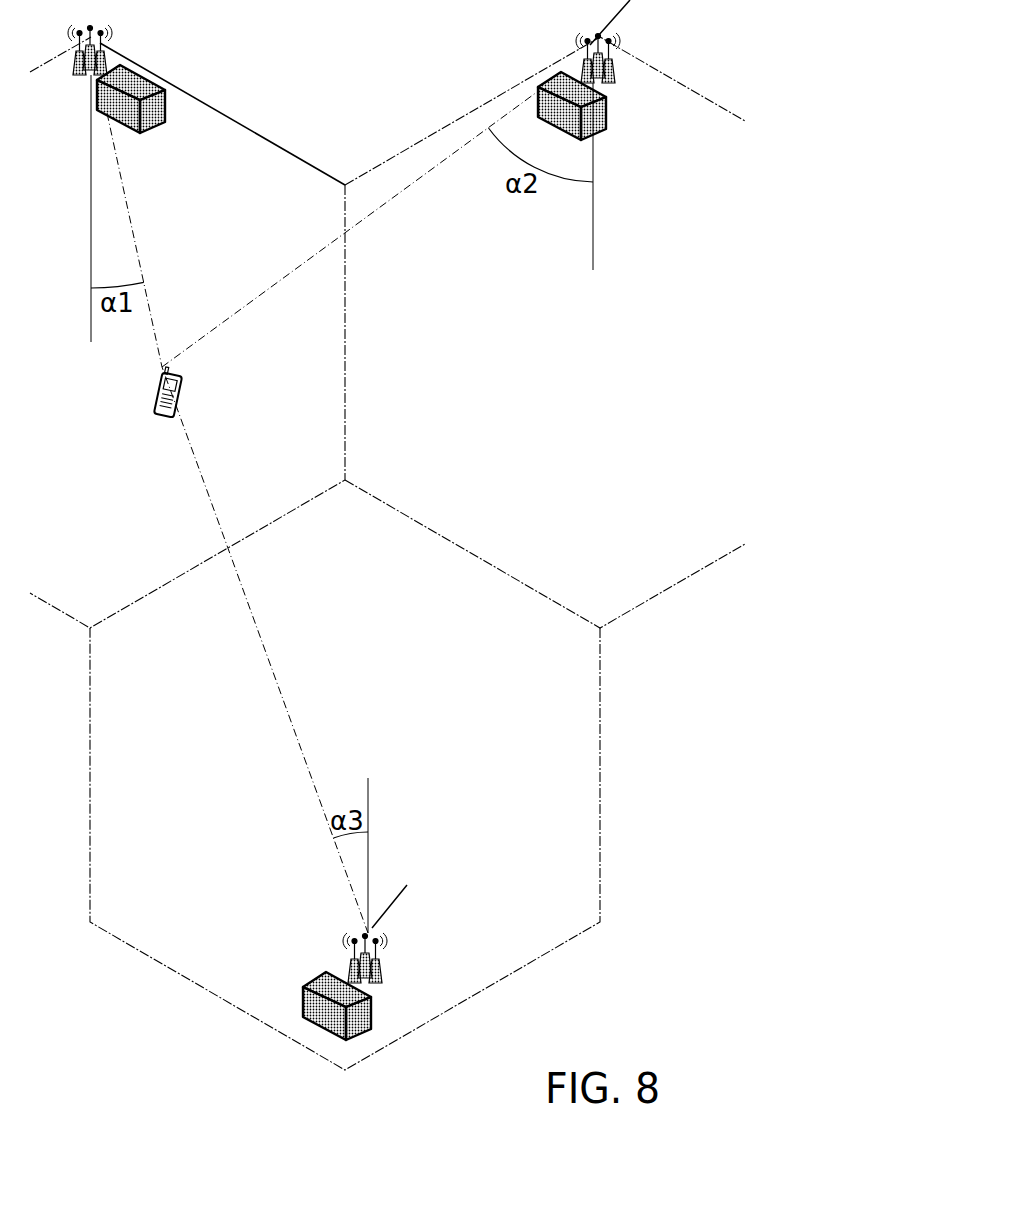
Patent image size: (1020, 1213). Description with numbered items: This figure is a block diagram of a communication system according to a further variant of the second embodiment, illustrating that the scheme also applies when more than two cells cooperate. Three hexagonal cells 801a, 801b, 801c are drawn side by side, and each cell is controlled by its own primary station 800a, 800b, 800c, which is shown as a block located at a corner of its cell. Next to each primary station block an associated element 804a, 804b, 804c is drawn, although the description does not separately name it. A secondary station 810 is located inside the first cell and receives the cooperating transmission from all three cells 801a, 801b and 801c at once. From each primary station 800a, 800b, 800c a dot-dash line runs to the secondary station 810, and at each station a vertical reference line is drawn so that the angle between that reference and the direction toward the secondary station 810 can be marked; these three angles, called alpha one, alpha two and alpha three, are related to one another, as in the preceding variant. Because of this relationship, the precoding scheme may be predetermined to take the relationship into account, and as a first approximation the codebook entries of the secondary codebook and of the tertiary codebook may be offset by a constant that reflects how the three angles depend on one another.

The primary station 800a is at (146, 73).
The primary station 800b is at (552, 68).
The primary station 800c is at (315, 975).
The antenna a 804a is at (80, 75).
The antenna b 804b is at (612, 80).
The antenna c 804c is at (385, 970).
The cell 801a is at (177, 263).
The cell 801b is at (538, 335).
The cell 801c is at (432, 718).
The secondary station 810 is at (182, 400).